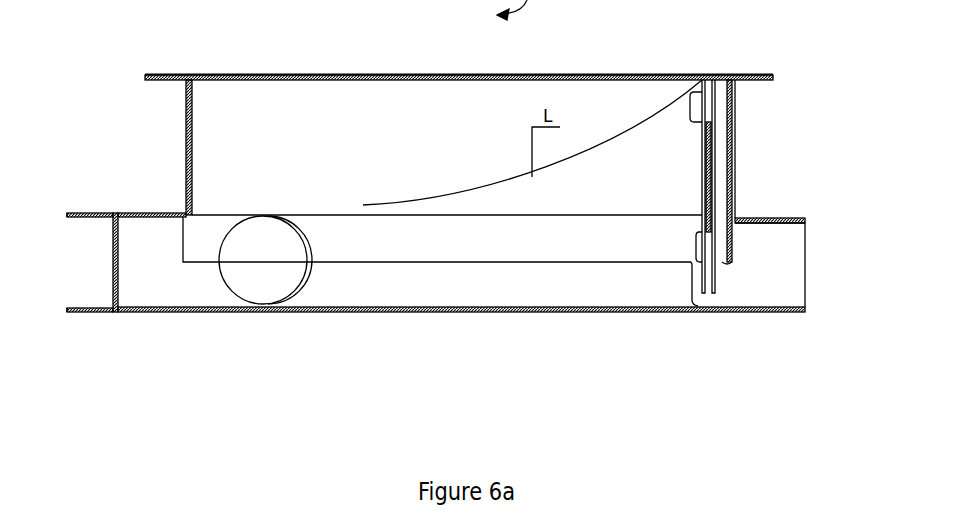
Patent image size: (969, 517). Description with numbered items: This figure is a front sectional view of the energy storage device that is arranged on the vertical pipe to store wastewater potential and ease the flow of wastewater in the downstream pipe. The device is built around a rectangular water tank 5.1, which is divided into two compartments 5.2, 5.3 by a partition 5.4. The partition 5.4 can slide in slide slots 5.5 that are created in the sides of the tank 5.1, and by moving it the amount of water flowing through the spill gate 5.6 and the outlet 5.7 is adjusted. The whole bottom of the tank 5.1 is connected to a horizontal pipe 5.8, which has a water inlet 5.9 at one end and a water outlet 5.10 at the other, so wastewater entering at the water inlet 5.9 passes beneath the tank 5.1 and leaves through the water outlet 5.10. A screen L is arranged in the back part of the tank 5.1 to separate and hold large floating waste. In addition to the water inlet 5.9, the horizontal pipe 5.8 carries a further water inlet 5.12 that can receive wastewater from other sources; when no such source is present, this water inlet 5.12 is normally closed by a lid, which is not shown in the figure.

The water tank 5.1 is at (187, 122).
The compartment 5.2 is at (398, 128).
The compartment 5.3 is at (722, 120).
The partition 5.4 is at (708, 173).
The slide slots 5.5 is at (708, 248).
The spill gate 5.6 is at (692, 115).
The outlet 5.7 is at (693, 280).
The horizontal pipe 5.8 is at (470, 280).
The water inlet 5.9 is at (108, 302).
The water outlet 5.10 is at (788, 288).
The water inlet 5.12 is at (270, 284).